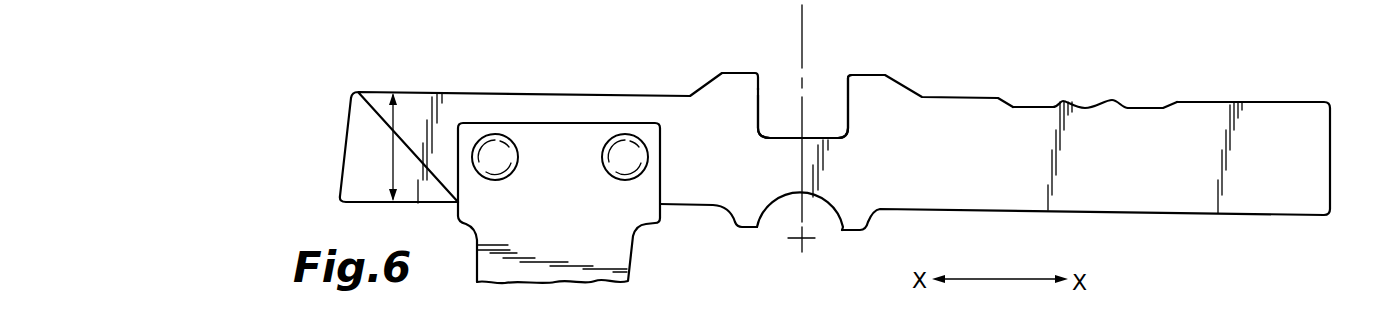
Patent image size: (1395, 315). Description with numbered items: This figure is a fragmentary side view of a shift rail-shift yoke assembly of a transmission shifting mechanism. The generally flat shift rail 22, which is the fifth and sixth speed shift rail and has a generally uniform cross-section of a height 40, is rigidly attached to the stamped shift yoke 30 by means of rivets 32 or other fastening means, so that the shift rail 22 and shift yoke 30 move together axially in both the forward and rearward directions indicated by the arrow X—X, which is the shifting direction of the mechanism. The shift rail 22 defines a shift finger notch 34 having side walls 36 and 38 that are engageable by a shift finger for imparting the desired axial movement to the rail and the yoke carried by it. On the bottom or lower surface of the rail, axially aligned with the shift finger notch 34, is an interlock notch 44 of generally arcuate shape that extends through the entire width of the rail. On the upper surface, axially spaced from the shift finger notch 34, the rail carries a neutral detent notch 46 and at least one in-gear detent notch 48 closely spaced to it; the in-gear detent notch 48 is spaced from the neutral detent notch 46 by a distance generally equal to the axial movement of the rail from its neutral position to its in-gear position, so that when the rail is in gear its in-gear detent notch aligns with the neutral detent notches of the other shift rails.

The shift rail 22 is at (1310, 158).
The shift yoke 30 is at (556, 253).
The rivets 32 is at (622, 152).
The shift finger notch 34 is at (813, 100).
The side wall 36 is at (843, 97).
The side wall 38 is at (758, 95).
The height 40 is at (393, 138).
The interlock notch 44 is at (823, 220).
The neutral detent notch 46 is at (1085, 107).
The in-gear detent notch 48 is at (1143, 108).